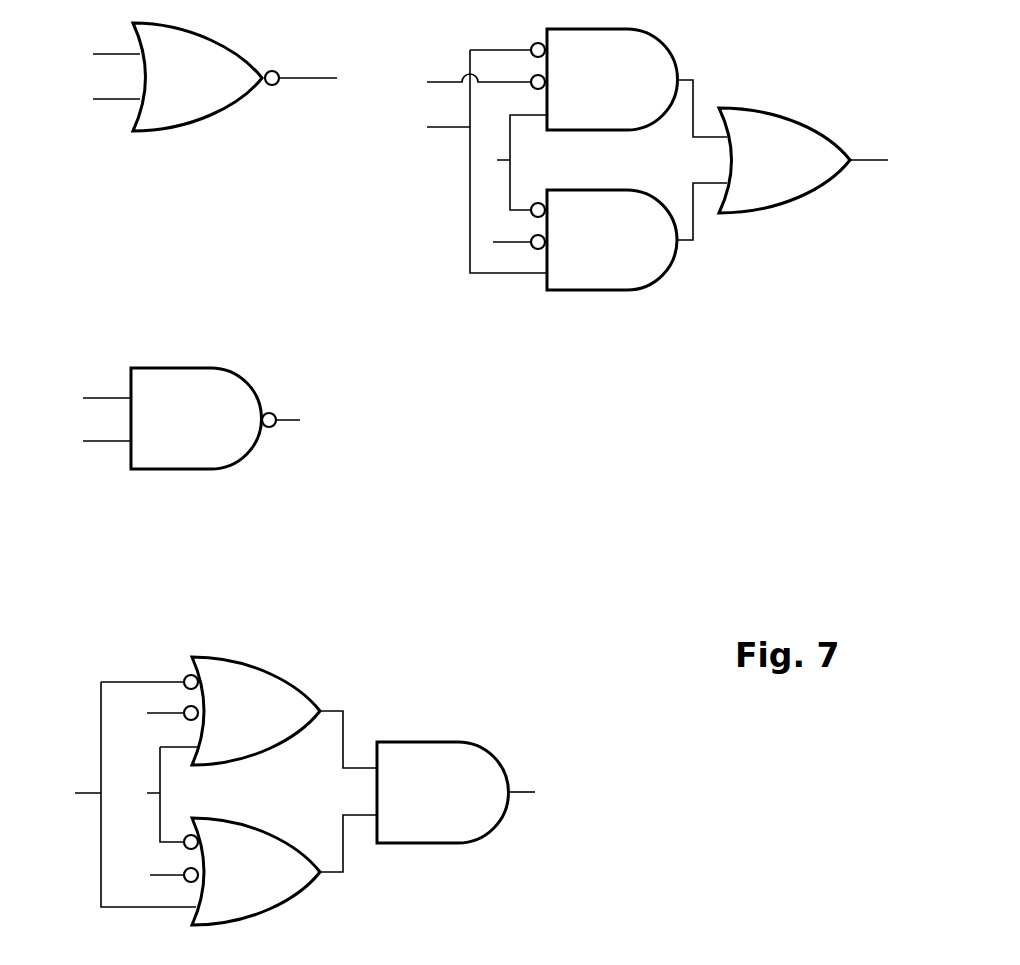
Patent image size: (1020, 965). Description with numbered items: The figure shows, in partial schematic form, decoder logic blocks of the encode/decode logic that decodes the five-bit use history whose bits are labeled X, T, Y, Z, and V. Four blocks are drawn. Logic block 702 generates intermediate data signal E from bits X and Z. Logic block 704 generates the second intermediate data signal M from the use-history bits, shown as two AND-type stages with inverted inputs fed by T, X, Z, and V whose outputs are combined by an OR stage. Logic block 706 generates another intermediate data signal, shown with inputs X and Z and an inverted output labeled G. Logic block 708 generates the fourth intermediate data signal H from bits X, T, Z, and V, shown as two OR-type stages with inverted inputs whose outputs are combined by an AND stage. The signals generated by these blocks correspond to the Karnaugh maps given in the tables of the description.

The logic block 702 is at (234, 129).
The logic block 704 is at (697, 284).
The logic block 706 is at (245, 467).
The logic block 708 is at (300, 903).